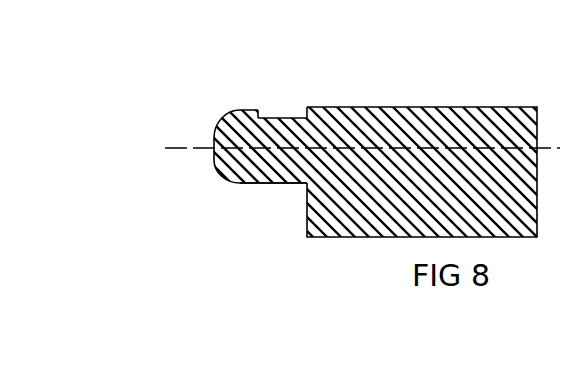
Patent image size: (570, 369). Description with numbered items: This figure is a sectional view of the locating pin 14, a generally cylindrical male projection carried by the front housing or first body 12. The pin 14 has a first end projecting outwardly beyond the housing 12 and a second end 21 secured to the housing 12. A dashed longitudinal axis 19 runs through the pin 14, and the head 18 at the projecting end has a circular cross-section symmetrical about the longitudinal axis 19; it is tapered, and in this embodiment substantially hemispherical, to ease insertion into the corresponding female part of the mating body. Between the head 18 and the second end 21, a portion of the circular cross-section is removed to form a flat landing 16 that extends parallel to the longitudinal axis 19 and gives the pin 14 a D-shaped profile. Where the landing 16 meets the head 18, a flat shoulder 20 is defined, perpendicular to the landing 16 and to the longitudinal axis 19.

The first body 12 is at (507, 103).
The locating pin 14 is at (258, 186).
The landing 16 is at (281, 117).
The head 18 is at (215, 135).
The longitudinal axis 19 is at (192, 150).
The shoulder 20 is at (258, 117).
The second end 21 is at (307, 110).